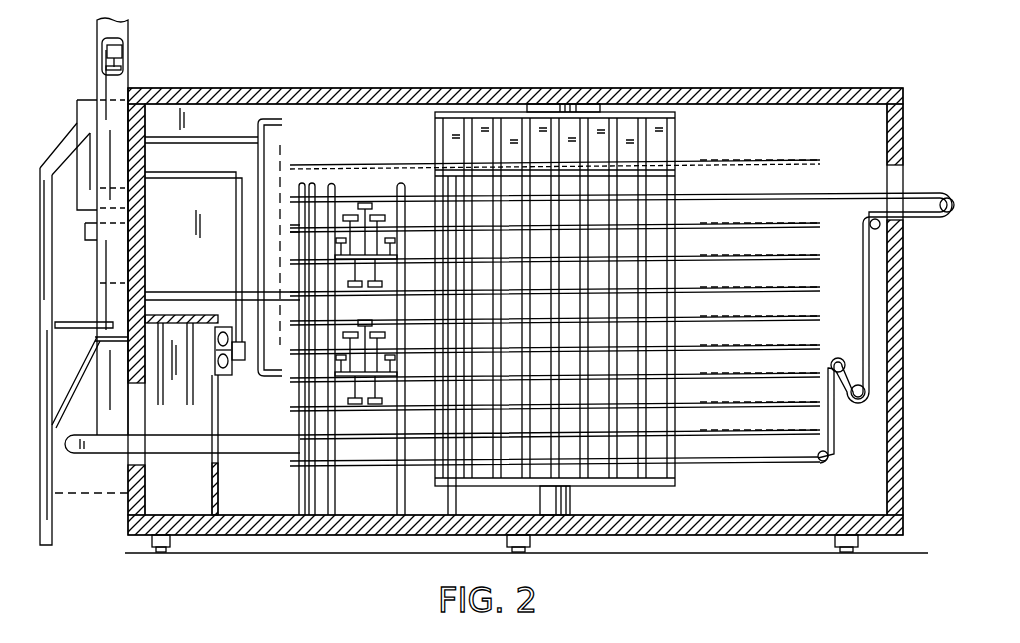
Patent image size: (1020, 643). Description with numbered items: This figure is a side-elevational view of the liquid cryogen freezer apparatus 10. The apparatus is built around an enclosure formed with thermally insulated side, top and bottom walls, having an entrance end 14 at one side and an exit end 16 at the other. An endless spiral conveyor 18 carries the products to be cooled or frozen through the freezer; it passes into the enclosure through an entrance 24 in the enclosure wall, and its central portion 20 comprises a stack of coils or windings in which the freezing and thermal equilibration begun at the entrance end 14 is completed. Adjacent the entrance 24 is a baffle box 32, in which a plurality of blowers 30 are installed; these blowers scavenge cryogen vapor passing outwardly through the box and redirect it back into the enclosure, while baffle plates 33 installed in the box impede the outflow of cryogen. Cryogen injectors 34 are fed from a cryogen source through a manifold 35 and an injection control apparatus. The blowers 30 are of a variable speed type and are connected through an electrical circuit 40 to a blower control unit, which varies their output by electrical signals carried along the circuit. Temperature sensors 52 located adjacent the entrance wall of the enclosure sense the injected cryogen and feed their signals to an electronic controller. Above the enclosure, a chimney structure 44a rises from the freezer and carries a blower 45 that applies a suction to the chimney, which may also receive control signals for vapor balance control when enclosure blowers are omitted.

The freezer apparatus 10 is at (660, 80).
The entrance end 14 is at (128, 512).
The exit end 16 is at (905, 474).
The endless spiral conveyor 18 is at (795, 463).
The central portion 20 is at (724, 195).
The entrance 24 is at (128, 408).
The blowers 30 is at (230, 376).
The baffle box 32 is at (173, 313).
The baffle plates 33 is at (163, 392).
The cryogen injectors 34 is at (366, 200).
The manifold 35 is at (200, 290).
The electrical circuit 40 is at (236, 206).
The post 44a is at (122, 36).
The blower 45 is at (125, 44).
The temperature sensors 52 is at (276, 120).